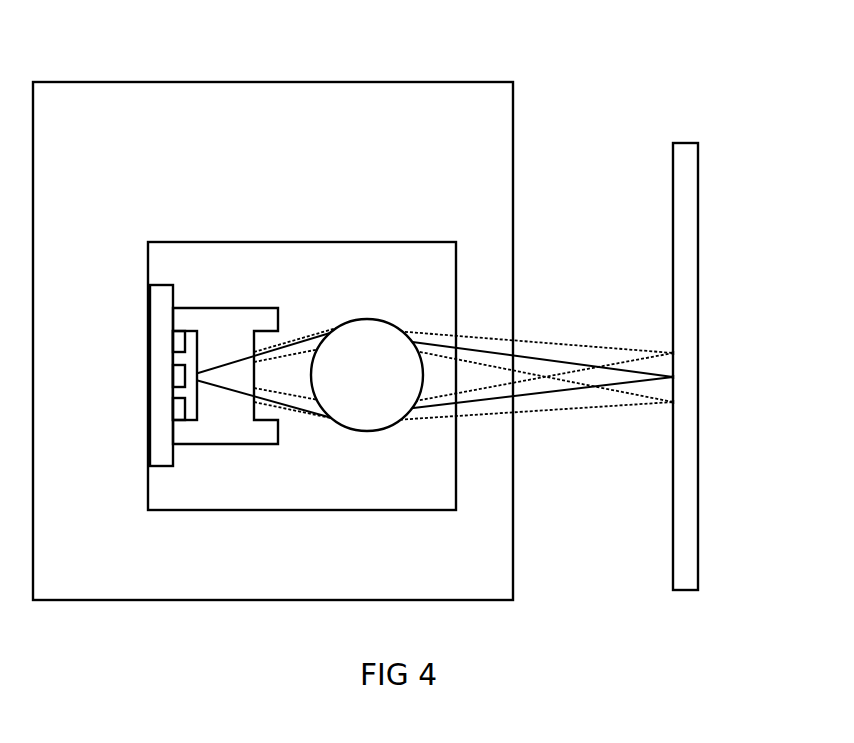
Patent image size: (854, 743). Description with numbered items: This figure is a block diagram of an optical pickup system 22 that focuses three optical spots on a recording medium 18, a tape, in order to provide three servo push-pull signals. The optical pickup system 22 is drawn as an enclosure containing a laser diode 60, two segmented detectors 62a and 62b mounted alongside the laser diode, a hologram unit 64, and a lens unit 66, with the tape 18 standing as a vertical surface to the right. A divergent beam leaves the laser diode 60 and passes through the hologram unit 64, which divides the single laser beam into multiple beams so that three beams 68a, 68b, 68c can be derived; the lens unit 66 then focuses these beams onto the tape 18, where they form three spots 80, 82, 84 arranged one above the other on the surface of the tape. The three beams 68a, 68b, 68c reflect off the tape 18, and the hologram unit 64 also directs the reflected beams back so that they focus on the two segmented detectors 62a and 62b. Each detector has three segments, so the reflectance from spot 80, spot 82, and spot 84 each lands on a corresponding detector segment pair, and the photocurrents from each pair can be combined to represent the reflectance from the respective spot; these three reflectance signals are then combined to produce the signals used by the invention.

The optical pickup system 22 is at (388, 82).
The recording medium 18 is at (698, 190).
The laser diode 60 is at (187, 374).
The segmented detector 62a is at (173, 410).
The segmented detector 62b is at (173, 342).
The hologram unit 64 is at (228, 305).
The lens unit 66 is at (367, 318).
The beam 68a is at (605, 355).
The beam 68b is at (638, 378).
The beam 68c is at (617, 402).
The optical spot 80 is at (677, 353).
The optical spot 82 is at (677, 377).
The optical spot 84 is at (677, 402).